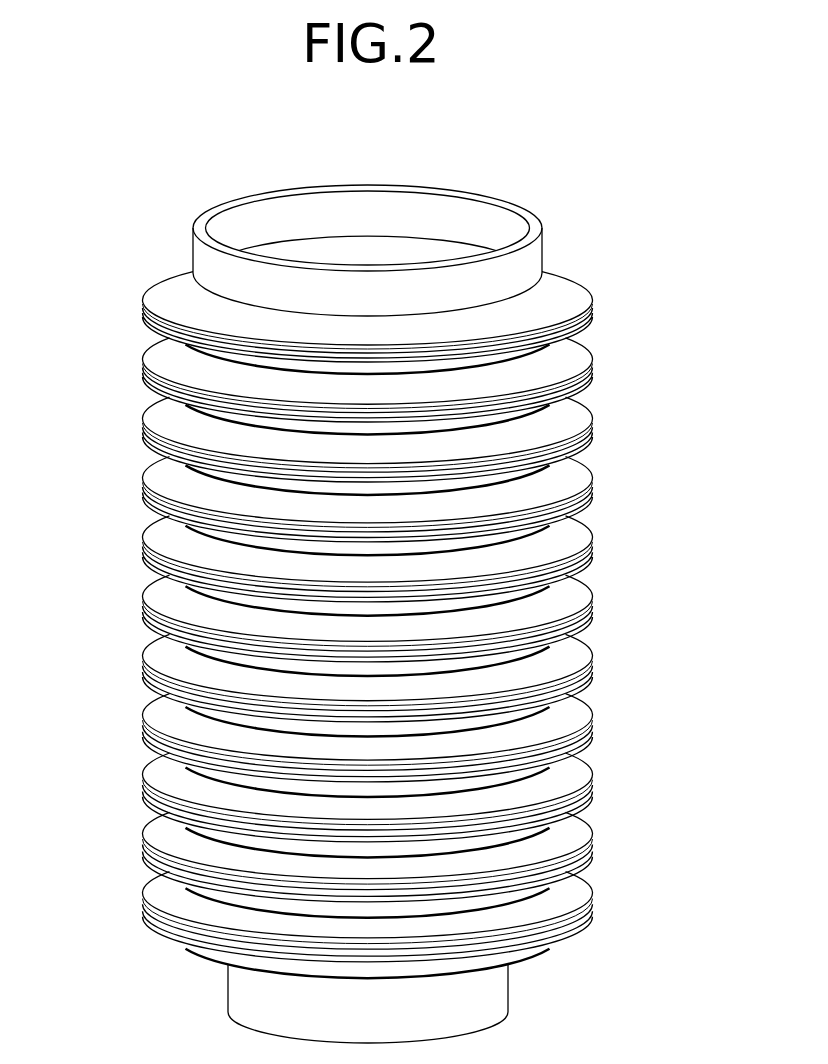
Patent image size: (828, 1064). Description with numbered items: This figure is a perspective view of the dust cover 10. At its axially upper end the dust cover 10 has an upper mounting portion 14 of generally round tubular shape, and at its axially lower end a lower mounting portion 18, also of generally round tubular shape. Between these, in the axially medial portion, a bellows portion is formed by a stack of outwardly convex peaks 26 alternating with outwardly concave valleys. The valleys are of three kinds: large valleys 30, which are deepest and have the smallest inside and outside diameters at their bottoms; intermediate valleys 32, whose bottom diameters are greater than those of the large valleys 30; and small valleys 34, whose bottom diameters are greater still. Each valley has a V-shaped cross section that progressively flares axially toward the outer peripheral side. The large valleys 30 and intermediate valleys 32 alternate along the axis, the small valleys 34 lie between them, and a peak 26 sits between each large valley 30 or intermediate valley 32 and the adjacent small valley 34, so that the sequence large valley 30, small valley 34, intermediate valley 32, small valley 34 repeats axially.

The dust cover 10 is at (592, 203).
The upper mounting portion 14 is at (212, 205).
The lower mounting portion 18 is at (517, 993).
The peak 26 is at (141, 307).
The large valley 30 is at (165, 413).
The intermediate valley 32 is at (160, 476).
The small valley 34 is at (160, 447).